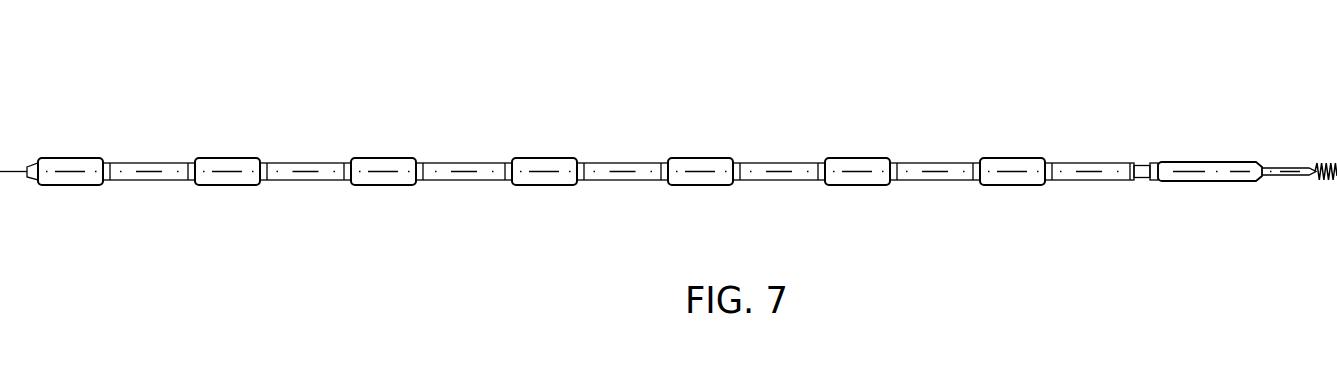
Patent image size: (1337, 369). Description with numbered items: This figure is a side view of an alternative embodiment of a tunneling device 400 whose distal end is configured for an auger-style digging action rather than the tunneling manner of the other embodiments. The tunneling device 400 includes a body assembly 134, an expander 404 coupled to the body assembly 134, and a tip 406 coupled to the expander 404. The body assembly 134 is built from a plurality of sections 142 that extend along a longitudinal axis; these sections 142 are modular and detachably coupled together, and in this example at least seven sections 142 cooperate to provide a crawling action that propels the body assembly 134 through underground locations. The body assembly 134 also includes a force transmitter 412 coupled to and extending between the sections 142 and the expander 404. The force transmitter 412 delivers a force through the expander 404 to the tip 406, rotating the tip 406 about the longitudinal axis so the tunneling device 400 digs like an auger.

The tunneling device 400 is at (1063, 93).
The body assembly 134 is at (347, 150).
The sections 142 is at (620, 162).
The force transmitter 412 is at (1188, 157).
The expander 404 is at (1289, 164).
The tip 406 is at (1330, 187).